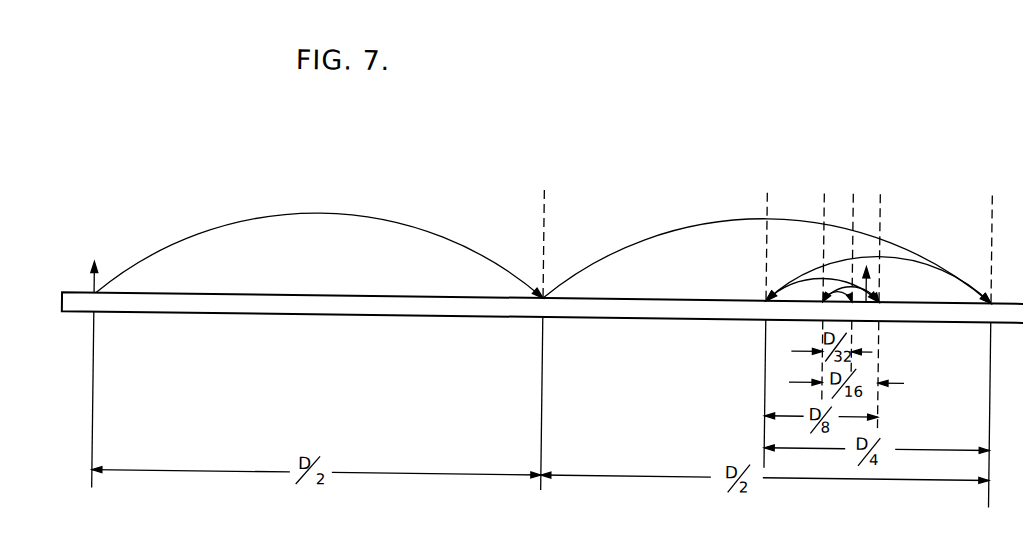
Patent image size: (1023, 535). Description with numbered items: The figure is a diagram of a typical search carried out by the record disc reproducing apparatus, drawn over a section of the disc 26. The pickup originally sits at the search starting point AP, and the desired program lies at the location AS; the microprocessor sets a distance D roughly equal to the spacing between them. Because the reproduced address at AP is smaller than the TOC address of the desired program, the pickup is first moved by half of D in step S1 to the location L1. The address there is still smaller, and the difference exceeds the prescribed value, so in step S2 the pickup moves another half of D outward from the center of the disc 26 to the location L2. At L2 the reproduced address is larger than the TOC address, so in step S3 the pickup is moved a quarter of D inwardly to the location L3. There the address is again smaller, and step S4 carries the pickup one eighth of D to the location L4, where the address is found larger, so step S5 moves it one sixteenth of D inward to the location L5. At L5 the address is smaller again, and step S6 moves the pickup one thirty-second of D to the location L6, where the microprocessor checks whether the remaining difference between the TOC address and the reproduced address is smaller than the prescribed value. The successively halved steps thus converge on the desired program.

The disc 26 is at (259, 318).
The first search step S1 is at (381, 221).
The second search step S2 is at (678, 226).
The third search step S3 is at (806, 272).
The fourth search step S4 is at (834, 280).
The fifth search step S5 is at (854, 255).
The sixth search step S6 is at (838, 290).
The first location L1 is at (546, 329).
The second location L2 is at (993, 338).
The third location L3 is at (766, 319).
The fourth location L4 is at (879, 301).
The fifth location L5 is at (822, 285).
The sixth location L6 is at (854, 271).
The search starting point AP is at (95, 264).
The desired program location AS is at (868, 269).